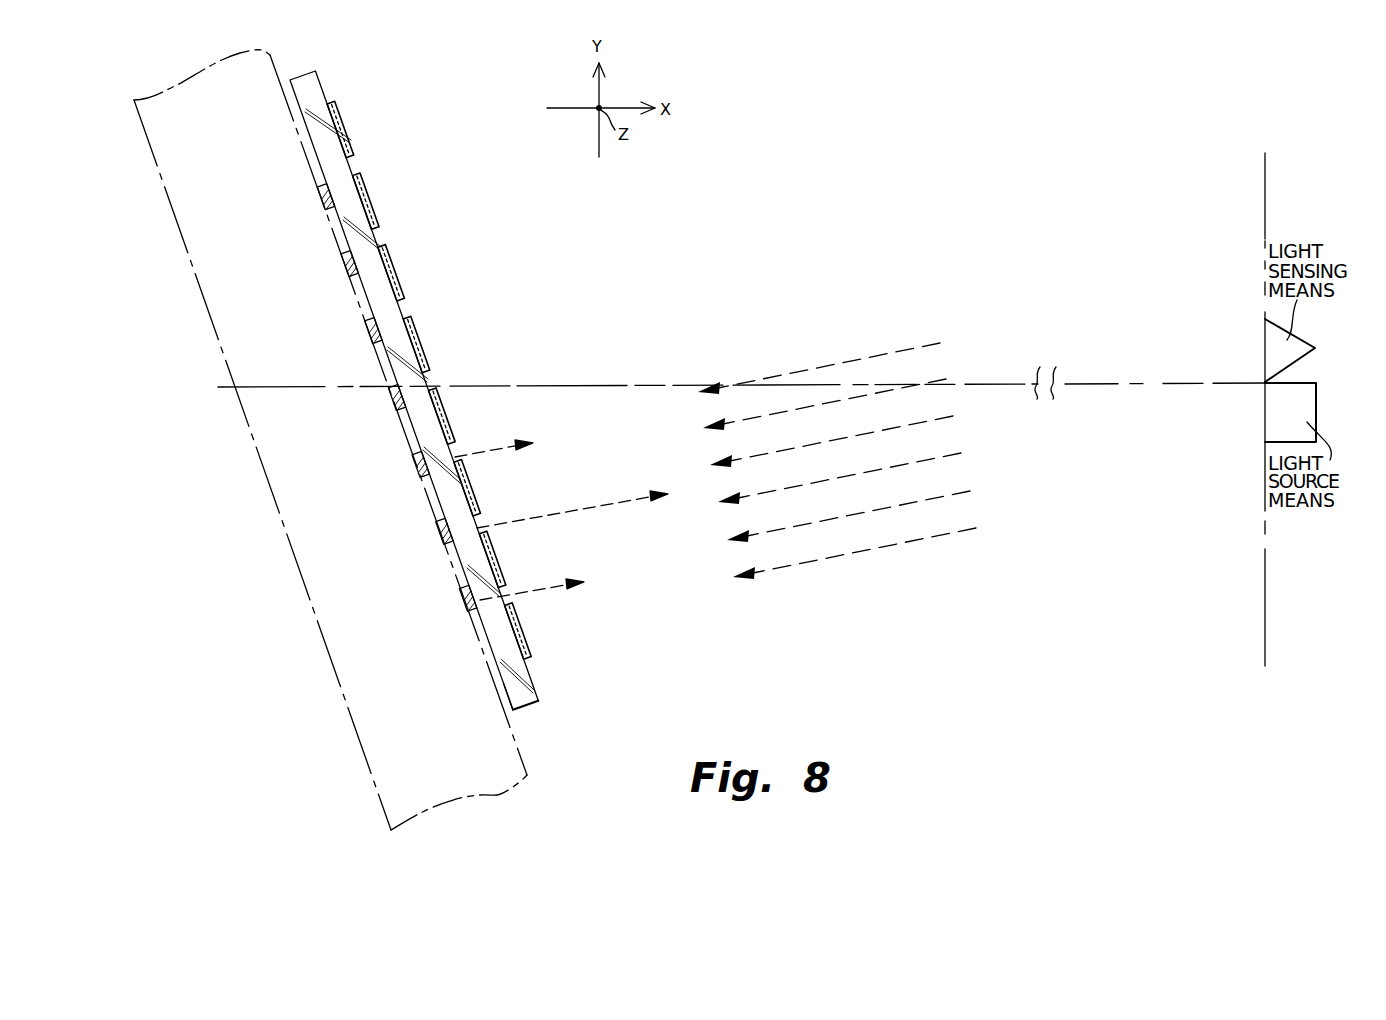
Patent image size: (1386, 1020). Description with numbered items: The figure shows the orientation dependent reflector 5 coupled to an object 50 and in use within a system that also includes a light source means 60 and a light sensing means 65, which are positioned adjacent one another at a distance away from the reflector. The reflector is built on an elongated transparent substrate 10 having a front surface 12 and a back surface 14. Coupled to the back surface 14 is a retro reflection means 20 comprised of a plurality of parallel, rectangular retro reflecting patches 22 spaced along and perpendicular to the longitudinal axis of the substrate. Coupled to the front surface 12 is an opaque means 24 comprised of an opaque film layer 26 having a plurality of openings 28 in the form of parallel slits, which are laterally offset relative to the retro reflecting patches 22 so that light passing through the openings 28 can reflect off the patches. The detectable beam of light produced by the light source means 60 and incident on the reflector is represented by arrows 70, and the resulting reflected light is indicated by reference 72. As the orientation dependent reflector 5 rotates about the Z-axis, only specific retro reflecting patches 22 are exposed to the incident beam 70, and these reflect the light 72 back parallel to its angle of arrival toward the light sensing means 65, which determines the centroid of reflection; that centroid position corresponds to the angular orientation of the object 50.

The orientation dependent reflector 5 is at (475, 313).
The transparent substrate 10 is at (414, 390).
The front surface 12 is at (525, 705).
The back surface 14 is at (508, 696).
The retro reflection means 20 is at (397, 398).
The retro reflecting patches 22 is at (397, 398).
The opaque means 24 is at (353, 165).
The opaque film layer 26 is at (353, 165).
The openings 28 is at (454, 452).
The object 50 is at (295, 518).
The light source means 60 is at (1278, 430).
The light sensing means 65 is at (1276, 355).
The incident detectable beam of light 70 is at (855, 362).
The reflected light 72 is at (500, 447).